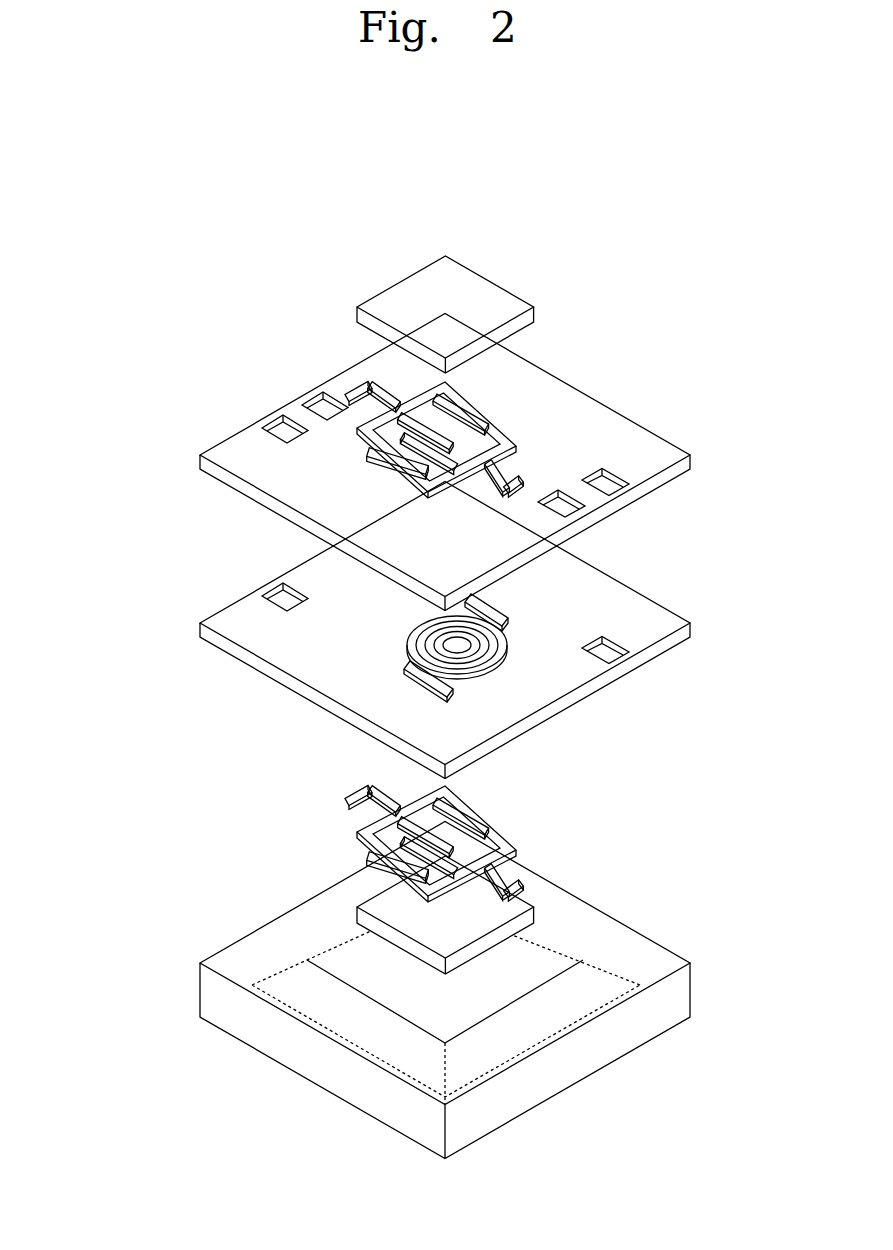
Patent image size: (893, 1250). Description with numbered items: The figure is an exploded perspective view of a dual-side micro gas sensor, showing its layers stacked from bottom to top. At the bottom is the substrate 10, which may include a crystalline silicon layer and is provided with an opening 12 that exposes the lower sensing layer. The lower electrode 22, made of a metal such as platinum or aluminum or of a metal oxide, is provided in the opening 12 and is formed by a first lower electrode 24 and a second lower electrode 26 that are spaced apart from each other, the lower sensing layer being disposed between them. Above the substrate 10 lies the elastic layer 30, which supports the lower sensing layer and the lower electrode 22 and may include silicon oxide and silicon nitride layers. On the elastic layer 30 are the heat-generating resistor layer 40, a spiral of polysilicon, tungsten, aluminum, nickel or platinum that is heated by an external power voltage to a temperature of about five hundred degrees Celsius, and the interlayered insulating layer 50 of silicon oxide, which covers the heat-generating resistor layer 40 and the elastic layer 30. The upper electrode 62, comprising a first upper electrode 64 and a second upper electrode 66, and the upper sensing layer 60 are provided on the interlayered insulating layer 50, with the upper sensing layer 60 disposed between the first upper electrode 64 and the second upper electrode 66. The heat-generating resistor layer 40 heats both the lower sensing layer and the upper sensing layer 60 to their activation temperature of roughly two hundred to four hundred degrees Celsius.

The substrate 10 is at (688, 985).
The opening 12 is at (340, 961).
The lower electrode 22 is at (484, 844).
The first lower electrode 24 is at (460, 822).
The second lower electrode 26 is at (471, 867).
The elastic layer 30 is at (690, 625).
The heat-generating resistor layer 40 is at (508, 639).
The interlayered insulating layer 50 is at (690, 457).
The upper sensing layer 60 is at (533, 318).
The upper electrode 62 is at (519, 415).
The first upper electrode 64 is at (483, 407).
The second upper electrode 66 is at (498, 440).